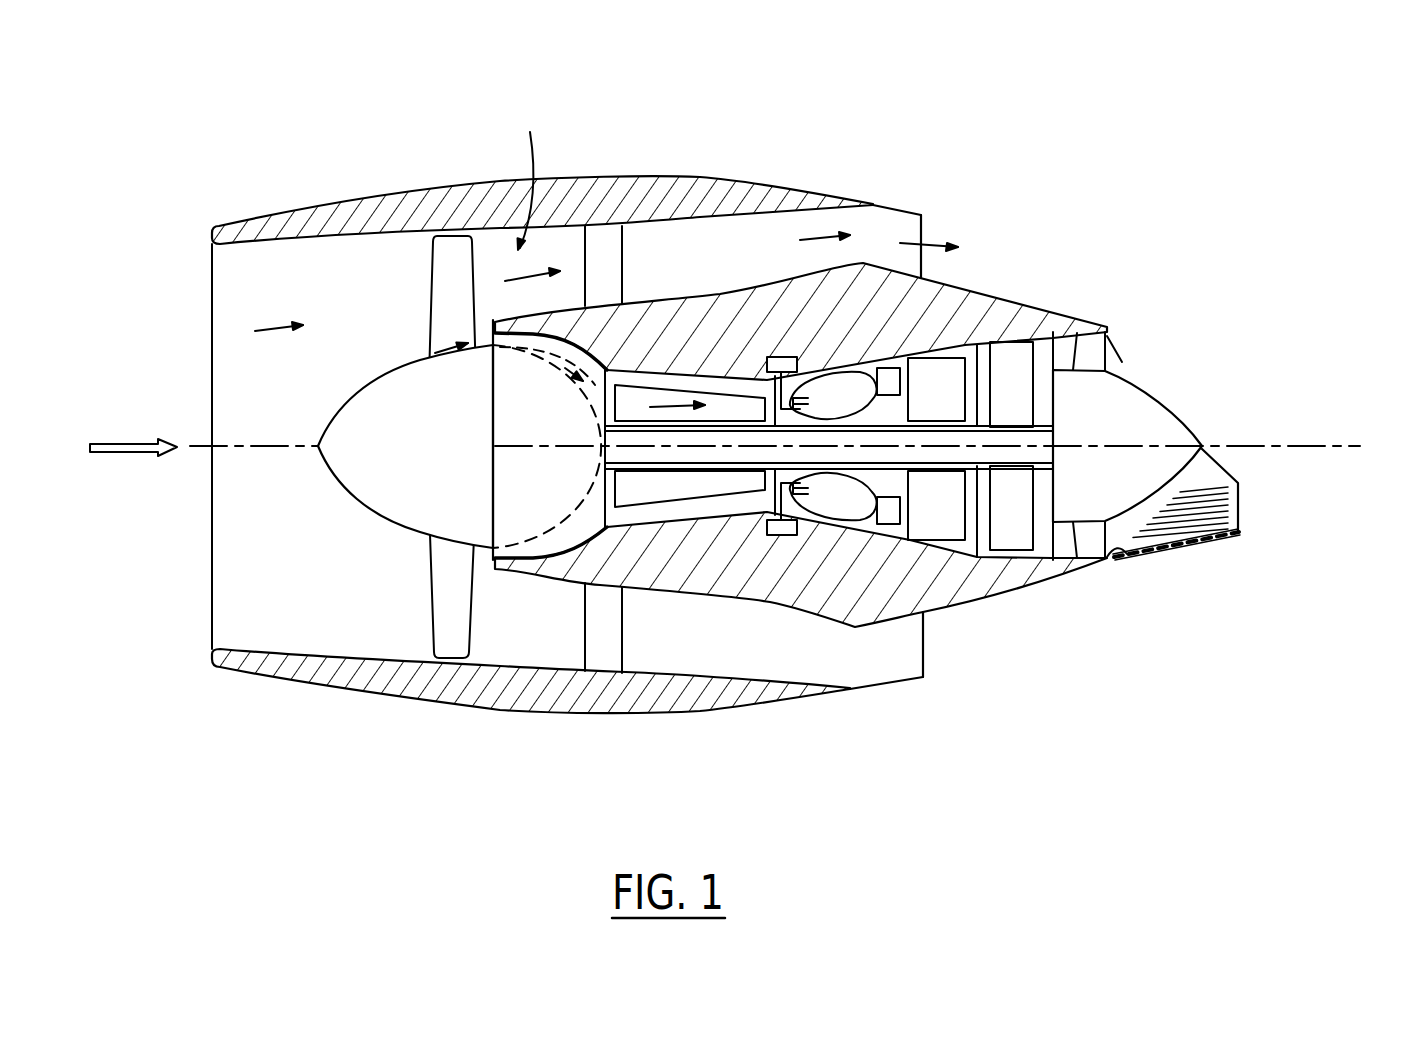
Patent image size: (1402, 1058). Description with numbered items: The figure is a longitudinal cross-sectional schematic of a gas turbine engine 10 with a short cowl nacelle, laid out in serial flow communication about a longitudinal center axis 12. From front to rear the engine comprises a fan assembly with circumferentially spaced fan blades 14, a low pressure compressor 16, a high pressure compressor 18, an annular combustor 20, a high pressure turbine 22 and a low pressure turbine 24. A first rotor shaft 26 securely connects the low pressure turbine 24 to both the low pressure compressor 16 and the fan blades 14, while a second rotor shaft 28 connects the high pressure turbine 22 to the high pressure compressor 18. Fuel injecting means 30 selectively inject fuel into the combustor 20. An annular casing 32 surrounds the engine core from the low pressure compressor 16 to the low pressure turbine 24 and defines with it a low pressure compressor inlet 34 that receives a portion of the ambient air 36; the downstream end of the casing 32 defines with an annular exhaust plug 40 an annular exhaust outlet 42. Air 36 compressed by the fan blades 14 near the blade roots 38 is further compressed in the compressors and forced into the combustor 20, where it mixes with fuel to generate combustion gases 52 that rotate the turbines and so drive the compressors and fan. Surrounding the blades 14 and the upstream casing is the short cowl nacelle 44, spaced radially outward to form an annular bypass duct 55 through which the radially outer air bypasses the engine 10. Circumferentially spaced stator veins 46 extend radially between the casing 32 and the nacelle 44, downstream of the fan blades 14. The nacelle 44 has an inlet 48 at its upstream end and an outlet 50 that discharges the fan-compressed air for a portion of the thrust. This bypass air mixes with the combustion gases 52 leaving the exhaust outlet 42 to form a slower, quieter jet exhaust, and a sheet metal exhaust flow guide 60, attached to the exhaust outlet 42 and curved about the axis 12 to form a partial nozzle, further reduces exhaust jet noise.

The gas turbine engine 10 is at (1053, 220).
The longitudinal center axis 12 is at (1315, 446).
The fan blades 14 is at (432, 590).
The low pressure compressor 16 is at (558, 499).
The high pressure compressor 18 is at (642, 398).
The annular combustor 20 is at (847, 503).
The high pressure turbine 22 is at (950, 516).
The low pressure turbine 24 is at (1028, 523).
The first rotor shaft 26 is at (979, 560).
The second rotor shaft 28 is at (772, 513).
The fuel injecting means 30 is at (783, 537).
The annular casing 32 is at (1022, 297).
The low pressure compressor inlet 34 is at (498, 565).
The ambient air 36 is at (140, 442).
The blade roots 38 is at (447, 533).
The annular exhaust plug 40 is at (1185, 413).
The annular exhaust outlet 42 is at (1122, 560).
The short cowl nacelle 44 is at (700, 181).
The stator veins 46 is at (603, 652).
The inlet 48 is at (213, 392).
The outlet 50 is at (922, 228).
The combustion gases 52 is at (918, 372).
The annular duct 55 is at (529, 170).
The exhaust flow guide 60 is at (1170, 556).